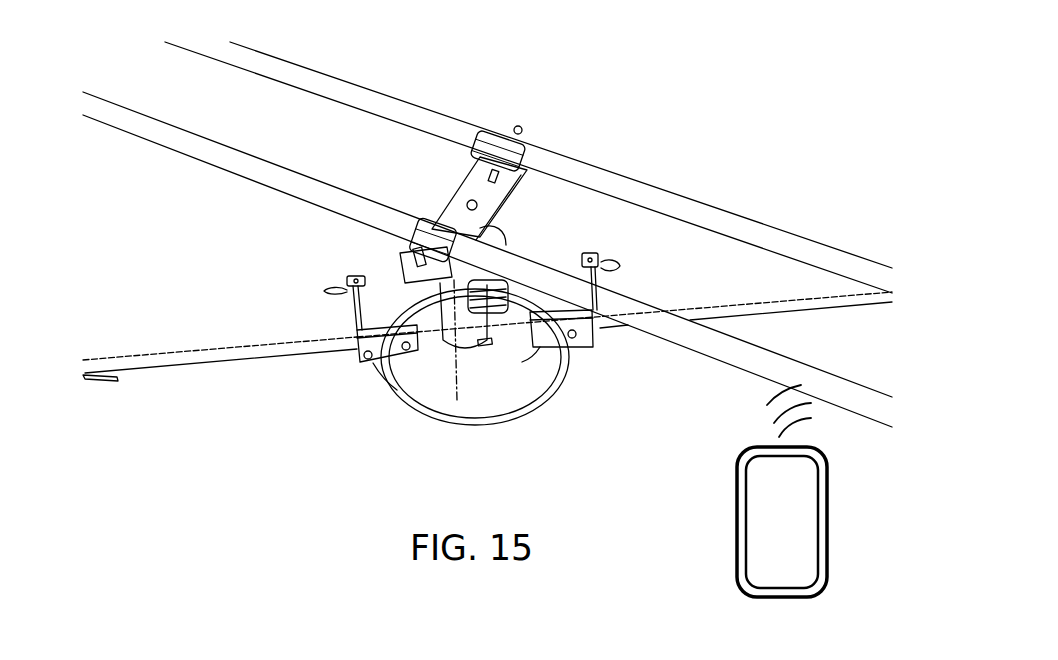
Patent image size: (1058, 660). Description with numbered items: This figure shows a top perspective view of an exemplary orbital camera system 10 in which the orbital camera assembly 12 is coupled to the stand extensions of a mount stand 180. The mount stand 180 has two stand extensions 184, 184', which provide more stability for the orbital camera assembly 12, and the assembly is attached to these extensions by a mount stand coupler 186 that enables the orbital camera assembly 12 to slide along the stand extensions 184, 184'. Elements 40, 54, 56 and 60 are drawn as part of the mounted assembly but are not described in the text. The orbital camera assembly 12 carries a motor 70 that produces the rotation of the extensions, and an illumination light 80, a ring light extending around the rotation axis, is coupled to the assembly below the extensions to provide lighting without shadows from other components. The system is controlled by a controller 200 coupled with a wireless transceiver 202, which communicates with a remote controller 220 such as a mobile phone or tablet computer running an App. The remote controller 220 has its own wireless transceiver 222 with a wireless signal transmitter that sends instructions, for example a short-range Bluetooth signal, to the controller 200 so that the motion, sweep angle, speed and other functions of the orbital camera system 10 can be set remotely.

The orbital camera system 10 is at (616, 134).
The orbital camera assembly 12 is at (458, 378).
The solar panel 40 is at (204, 353).
The first clamp bracket 54 is at (400, 383).
The second clamp bracket 56 is at (553, 298).
The panel frame 60 is at (732, 317).
The motor 70 is at (522, 343).
The illumination light 80 is at (507, 400).
The mount stand 180 is at (668, 197).
The stand extension 184 is at (487, 255).
The stand extension 184' is at (528, 147).
The mount stand coupler 186 is at (483, 130).
The controller 200 is at (480, 283).
The wireless transceiver 202 is at (483, 396).
The remote controller 220 is at (745, 448).
The wireless transceiver 222 is at (826, 457).